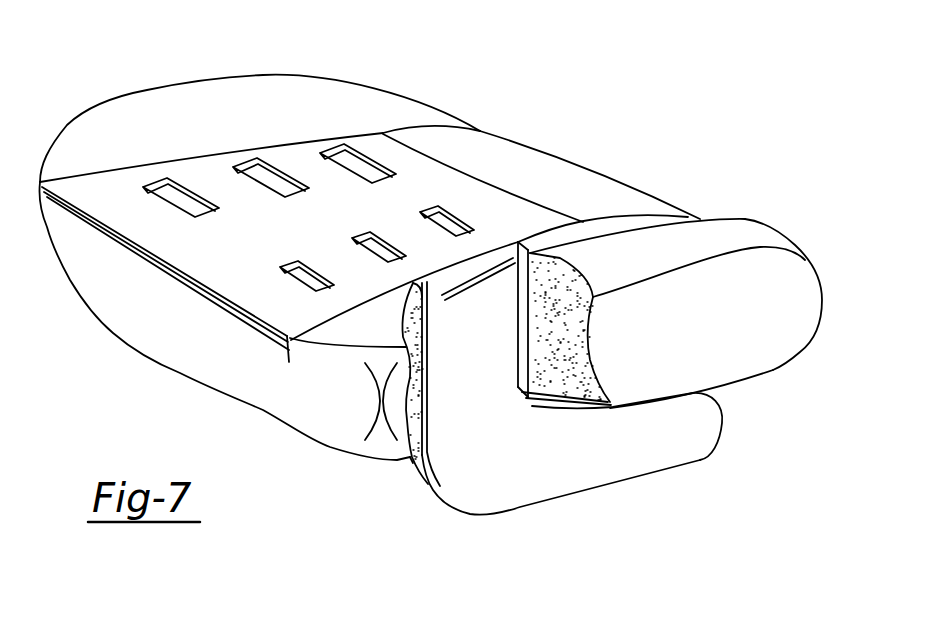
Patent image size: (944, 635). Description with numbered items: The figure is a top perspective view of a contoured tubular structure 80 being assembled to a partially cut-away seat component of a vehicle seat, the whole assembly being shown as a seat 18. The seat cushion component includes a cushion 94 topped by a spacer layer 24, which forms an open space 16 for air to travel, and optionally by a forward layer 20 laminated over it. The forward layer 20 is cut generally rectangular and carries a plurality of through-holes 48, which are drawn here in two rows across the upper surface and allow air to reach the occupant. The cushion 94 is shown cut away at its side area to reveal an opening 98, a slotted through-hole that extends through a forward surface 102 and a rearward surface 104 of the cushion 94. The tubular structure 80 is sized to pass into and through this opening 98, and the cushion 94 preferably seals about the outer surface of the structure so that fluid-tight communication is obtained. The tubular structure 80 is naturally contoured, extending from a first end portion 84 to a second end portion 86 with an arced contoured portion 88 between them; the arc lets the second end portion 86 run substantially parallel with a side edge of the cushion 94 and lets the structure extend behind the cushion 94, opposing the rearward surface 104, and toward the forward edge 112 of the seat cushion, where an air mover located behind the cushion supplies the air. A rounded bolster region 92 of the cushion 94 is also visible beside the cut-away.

The seat cushion assembly 18 is at (674, 58).
The open space 16 is at (233, 308).
The forward layer 20 is at (148, 228).
The spacer layer 24 is at (187, 275).
The through-holes 48 is at (332, 156).
The forward edge 112 is at (615, 175).
The bolster 92 is at (700, 232).
The cushion 94 is at (793, 298).
The rearward surface 104 is at (749, 413).
The opening 98 is at (528, 305).
The forward surface 102 is at (355, 331).
The tubular structure 80 is at (448, 516).
The first end portion 84 is at (454, 355).
The second end portion 86 is at (638, 441).
The contoured portion 88 is at (487, 470).